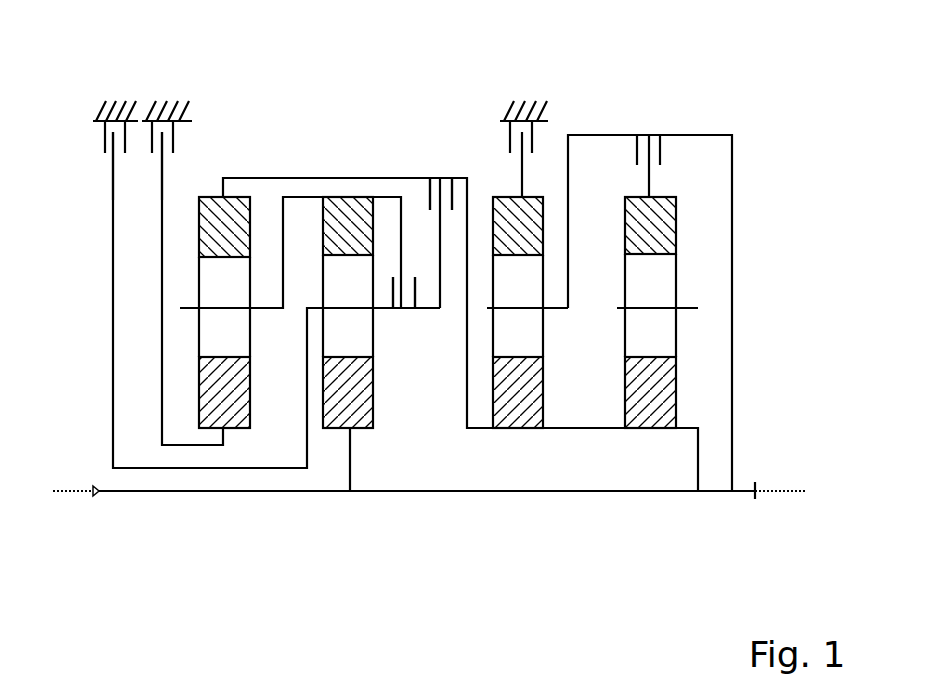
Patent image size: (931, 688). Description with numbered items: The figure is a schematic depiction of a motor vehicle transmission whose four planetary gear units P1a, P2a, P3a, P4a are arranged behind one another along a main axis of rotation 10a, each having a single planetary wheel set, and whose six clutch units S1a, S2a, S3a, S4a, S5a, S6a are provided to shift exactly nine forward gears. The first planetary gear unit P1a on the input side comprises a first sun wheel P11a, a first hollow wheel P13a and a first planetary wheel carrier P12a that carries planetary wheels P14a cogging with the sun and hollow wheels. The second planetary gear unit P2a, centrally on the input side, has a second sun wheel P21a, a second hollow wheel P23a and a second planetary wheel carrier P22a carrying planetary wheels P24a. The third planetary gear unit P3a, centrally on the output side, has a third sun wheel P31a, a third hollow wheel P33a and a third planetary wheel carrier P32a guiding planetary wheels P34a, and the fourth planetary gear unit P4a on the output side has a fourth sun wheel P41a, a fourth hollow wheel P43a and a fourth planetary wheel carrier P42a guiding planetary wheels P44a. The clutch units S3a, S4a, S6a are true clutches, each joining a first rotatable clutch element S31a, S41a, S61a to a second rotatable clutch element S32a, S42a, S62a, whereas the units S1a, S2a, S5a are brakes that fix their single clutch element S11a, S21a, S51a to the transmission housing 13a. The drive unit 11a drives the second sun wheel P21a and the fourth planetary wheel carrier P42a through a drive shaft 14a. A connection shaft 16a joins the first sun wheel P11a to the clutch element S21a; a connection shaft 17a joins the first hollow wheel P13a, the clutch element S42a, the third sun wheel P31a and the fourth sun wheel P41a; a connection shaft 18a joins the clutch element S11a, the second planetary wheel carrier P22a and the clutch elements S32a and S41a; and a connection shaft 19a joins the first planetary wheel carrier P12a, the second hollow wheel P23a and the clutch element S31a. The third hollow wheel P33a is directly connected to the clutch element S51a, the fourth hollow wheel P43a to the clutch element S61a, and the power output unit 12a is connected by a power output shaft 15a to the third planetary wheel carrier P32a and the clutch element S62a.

The main axis of rotation 10a is at (715, 492).
The drive unit 11a is at (95, 505).
The power output unit 12a is at (755, 503).
The transmission housing 13a is at (140, 98).
The drive shaft 14a is at (418, 492).
The power output shaft 15a is at (733, 158).
The connection shaft 16a is at (162, 352).
The connection shaft 17a is at (465, 397).
The connection shaft 18a is at (113, 408).
The connection shaft 19a is at (293, 196).
The first planetary gear unit P1a is at (194, 339).
The first sun wheel P11a is at (208, 395).
The first planetary wheel carrier P12a is at (240, 312).
The first hollow wheel P13a is at (222, 235).
The planetary wheels P14a is at (222, 323).
The second planetary gear unit P2a is at (330, 340).
The second sun wheel P21a is at (338, 400).
The second planetary wheel carrier P22a is at (352, 310).
The second hollow wheel P23a is at (336, 228).
The planetary wheels P24a is at (340, 330).
The third planetary gear unit P3a is at (564, 340).
The third sun wheel P31a is at (512, 393).
The third planetary wheel carrier P32a is at (520, 312).
The third hollow wheel P33a is at (517, 222).
The planetary wheels P34a is at (515, 282).
The fourth planetary gear unit P4a is at (725, 223).
The fourth sun wheel P41a is at (650, 398).
The fourth planetary wheel carrier P42a is at (650, 310).
The fourth hollow wheel P43a is at (650, 220).
The planetary wheels P44a is at (650, 283).
The first clutch unit S1a is at (115, 95).
The clutch element S11a is at (113, 172).
The second clutch unit S2a is at (176, 95).
The clutch element S21a is at (162, 142).
The third clutch unit S3a is at (422, 248).
The first rotatable clutch element S31a is at (403, 290).
The second rotatable clutch element S32a is at (393, 280).
The fourth clutch unit S4a is at (457, 163).
The first rotatable clutch element S41a is at (452, 176).
The second rotatable clutch element S42a is at (430, 176).
The fifth clutch unit S5a is at (542, 128).
The clutch element S51a is at (535, 180).
The sixth clutch unit S6a is at (662, 124).
The first rotatable clutch element S61a is at (643, 134).
The second rotatable clutch element S62a is at (660, 135).